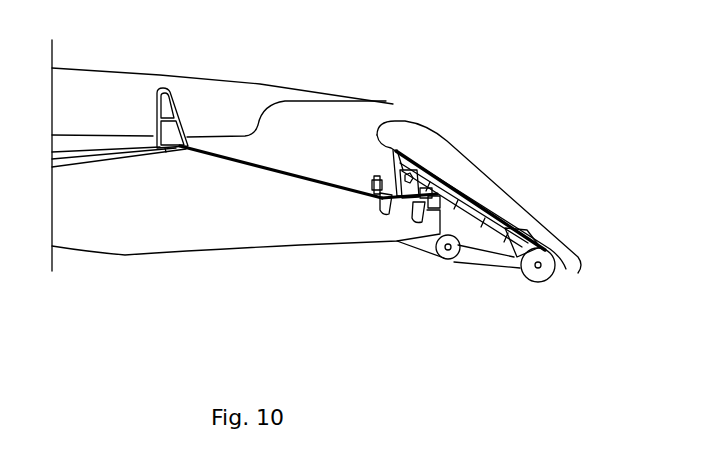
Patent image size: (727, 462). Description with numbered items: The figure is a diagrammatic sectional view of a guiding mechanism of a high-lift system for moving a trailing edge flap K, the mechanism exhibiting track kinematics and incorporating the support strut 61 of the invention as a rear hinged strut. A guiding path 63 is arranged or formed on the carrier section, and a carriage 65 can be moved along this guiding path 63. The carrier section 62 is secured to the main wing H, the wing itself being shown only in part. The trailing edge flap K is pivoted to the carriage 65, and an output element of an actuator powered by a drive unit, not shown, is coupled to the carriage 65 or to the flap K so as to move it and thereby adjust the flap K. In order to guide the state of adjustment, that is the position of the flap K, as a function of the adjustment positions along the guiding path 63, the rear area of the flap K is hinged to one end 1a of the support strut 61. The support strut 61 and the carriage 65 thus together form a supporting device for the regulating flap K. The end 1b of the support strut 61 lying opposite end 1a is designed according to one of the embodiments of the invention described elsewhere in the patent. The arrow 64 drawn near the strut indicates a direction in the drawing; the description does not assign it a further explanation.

The main wing H is at (112, 85).
The trailing edge flap K is at (443, 156).
The guiding path 63 is at (258, 165).
The carrier section 62 is at (128, 232).
The carriage 65 is at (382, 207).
The end of the support strut 1b is at (456, 258).
The support strut 61 is at (478, 259).
The direction of movement arrow 64 is at (489, 279).
The end of the support strut 1a is at (512, 262).